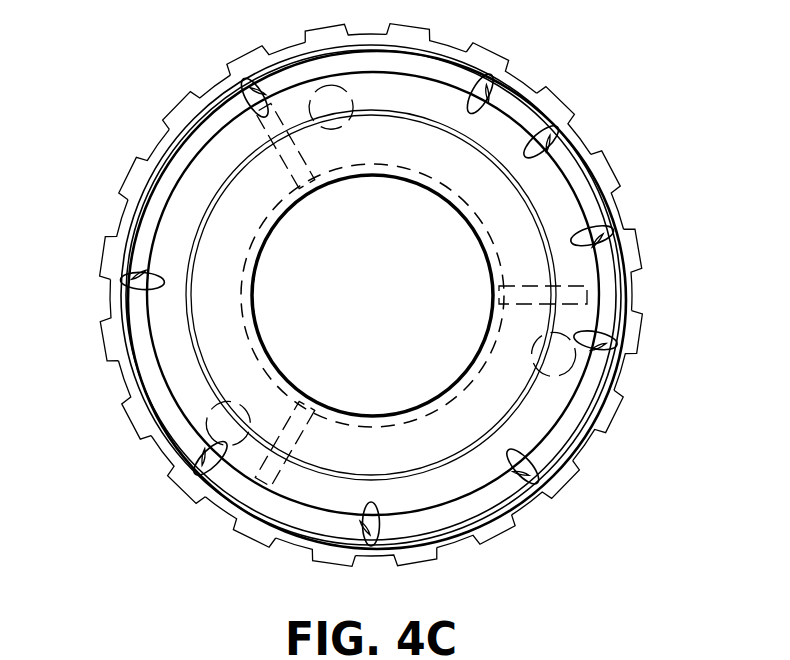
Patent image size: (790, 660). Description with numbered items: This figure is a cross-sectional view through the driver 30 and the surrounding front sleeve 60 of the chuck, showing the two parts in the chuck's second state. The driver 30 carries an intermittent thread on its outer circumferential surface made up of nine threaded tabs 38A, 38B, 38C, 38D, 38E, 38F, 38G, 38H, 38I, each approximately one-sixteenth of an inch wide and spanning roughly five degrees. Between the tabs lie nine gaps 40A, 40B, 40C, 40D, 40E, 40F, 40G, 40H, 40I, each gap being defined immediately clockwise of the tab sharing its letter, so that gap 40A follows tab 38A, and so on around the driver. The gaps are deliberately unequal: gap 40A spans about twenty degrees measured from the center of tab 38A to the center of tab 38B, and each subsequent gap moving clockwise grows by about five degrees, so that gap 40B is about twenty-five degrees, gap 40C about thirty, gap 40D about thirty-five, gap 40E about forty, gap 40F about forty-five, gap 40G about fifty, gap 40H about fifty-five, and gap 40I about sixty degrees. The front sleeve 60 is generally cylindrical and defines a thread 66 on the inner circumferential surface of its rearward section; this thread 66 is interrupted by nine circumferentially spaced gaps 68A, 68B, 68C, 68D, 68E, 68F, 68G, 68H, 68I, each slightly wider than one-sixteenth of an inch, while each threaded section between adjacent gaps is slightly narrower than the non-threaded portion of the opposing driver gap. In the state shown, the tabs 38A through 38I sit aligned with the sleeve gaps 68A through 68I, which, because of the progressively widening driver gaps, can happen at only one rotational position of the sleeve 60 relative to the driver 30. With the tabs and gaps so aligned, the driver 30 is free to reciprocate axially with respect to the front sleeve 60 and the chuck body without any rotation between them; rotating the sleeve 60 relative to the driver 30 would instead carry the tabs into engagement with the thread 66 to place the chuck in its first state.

The driver 30 is at (610, 392).
The front sleeve 60 is at (617, 165).
The thread 66 is at (180, 403).
The threaded tab 38A is at (497, 75).
The threaded tab 38B is at (550, 123).
The threaded tab 38C is at (602, 220).
The threaded tab 38D is at (602, 333).
The threaded tab 38E is at (540, 463).
The threaded tab 38F is at (347, 528).
The threaded tab 38G is at (226, 478).
The threaded tab 38H is at (140, 262).
The threaded tab 38I is at (236, 100).
The gap 40A is at (565, 99).
The gap 40B is at (620, 184).
The gap 40C is at (600, 293).
The gap 40D is at (568, 413).
The gap 40E is at (443, 517).
The gap 40F is at (268, 534).
The gap 40G is at (175, 398).
The gap 40H is at (180, 178).
The gap 40I is at (465, 50).
The gap 68A is at (548, 90).
The gap 68B is at (588, 137).
The gap 68C is at (600, 243).
The gap 68D is at (604, 355).
The gap 68E is at (552, 495).
The gap 68F is at (381, 530).
The gap 68G is at (212, 462).
The gap 68H is at (148, 293).
The gap 68I is at (262, 92).